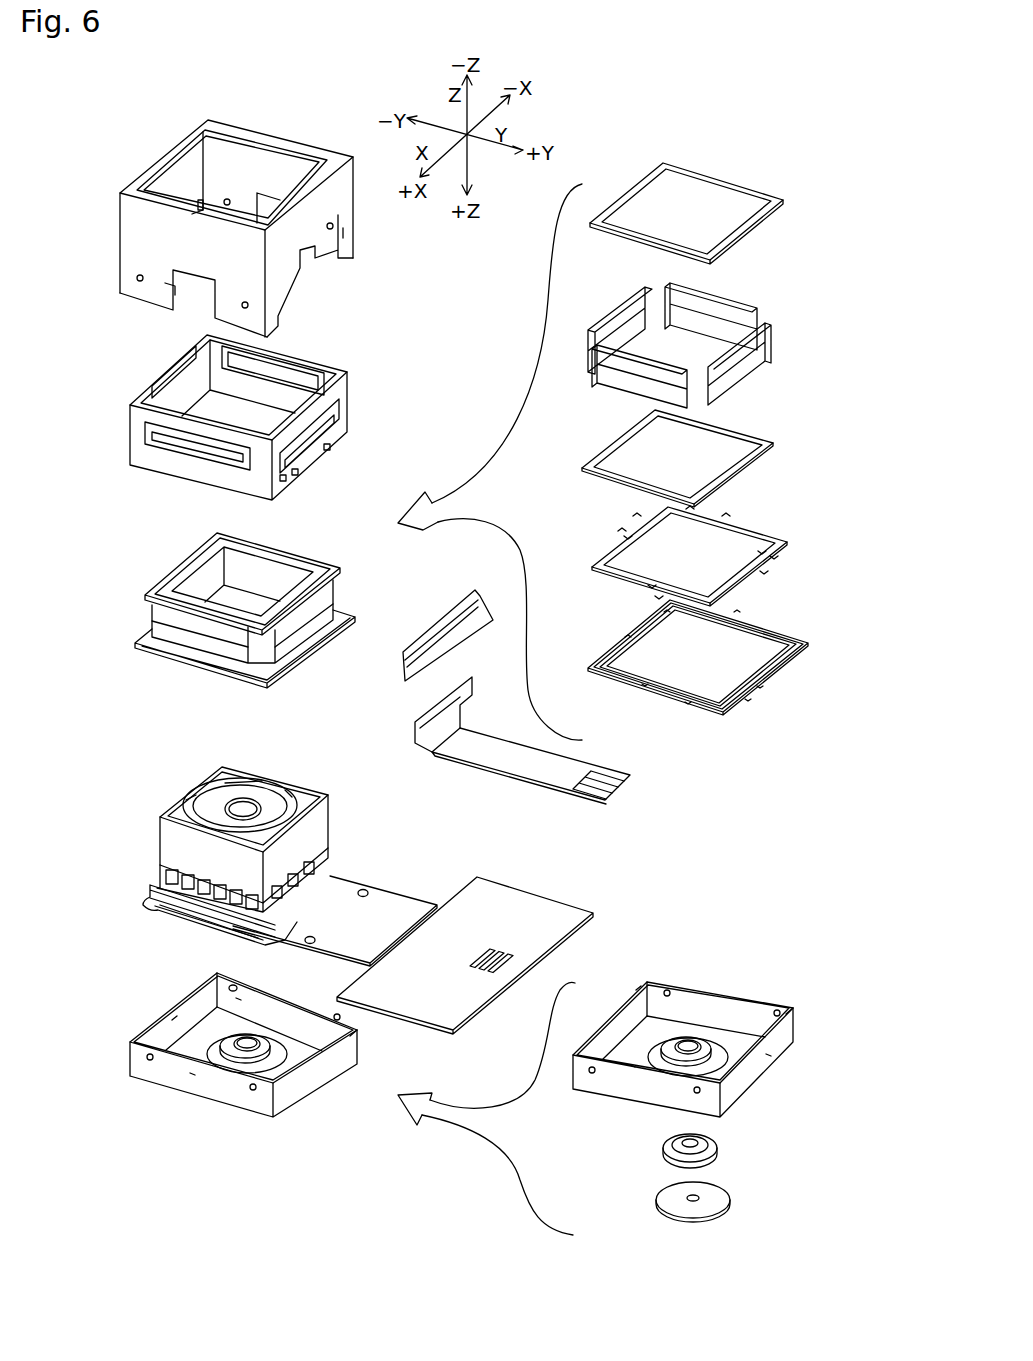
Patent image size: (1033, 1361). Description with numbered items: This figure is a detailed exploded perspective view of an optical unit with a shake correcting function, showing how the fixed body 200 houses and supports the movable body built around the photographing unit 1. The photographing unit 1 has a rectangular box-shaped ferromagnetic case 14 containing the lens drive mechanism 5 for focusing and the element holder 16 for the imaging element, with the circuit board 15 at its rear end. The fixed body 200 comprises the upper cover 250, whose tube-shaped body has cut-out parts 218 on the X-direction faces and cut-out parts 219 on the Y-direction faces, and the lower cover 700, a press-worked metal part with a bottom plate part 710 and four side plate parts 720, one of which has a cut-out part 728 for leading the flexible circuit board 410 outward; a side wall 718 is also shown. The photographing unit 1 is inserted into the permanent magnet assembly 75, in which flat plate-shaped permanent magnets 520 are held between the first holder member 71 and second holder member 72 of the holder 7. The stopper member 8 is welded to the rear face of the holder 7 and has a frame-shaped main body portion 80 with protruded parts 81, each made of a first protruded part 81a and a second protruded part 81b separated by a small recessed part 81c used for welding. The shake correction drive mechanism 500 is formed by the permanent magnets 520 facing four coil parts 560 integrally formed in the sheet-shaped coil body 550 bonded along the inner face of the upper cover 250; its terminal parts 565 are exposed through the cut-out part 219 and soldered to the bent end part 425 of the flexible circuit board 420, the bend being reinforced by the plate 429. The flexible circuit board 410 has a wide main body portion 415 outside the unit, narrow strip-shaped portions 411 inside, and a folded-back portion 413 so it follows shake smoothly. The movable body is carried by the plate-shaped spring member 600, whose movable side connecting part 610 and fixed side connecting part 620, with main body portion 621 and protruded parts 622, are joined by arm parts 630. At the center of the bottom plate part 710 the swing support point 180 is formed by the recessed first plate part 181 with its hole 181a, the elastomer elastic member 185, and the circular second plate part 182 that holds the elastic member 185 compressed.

The photographing unit 1 is at (272, 790).
The lens drive mechanism 5 is at (293, 798).
The holder 7 is at (80, 661).
The stopper member 8 is at (753, 517).
The case 14 is at (323, 820).
The circuit board 15 is at (162, 895).
The element holder 16 is at (332, 852).
The first holder member 71 is at (147, 592).
The second holder member 72 is at (152, 630).
The permanent magnet assembly 75 is at (338, 592).
The main body portion 80 is at (782, 543).
The protruded part 81 is at (823, 395).
The first protruded part 81a is at (722, 518).
The second protruded part 81b is at (690, 510).
The small recessed part 81c is at (628, 537).
The swing support point 180 is at (247, 1042).
The first plate part 181 is at (708, 1060).
The hole 181a is at (685, 1050).
The second plate part 182 is at (723, 1198).
The elastic member 185 is at (717, 1148).
The fixed body 200 is at (118, 223).
The cut-out part 218 is at (270, 197).
The cut-out part 219 is at (200, 208).
The upper cover 250 is at (241, 209).
The flexible circuit board 410 is at (550, 917).
The strip-shaped portion 411 is at (203, 925).
The folded-back portion 413 is at (160, 895).
The main body portion 415 is at (467, 910).
The flexible circuit board 420 is at (502, 757).
The end part 425 is at (468, 693).
The plate 429 is at (460, 602).
The shake correction drive mechanism 500 is at (100, 554).
The permanent magnet 520 is at (800, 332).
The sheet-shaped coil body 550 is at (343, 447).
The coil part 560 is at (372, 375).
The terminal part 565 is at (295, 472).
The spring member 600 is at (595, 673).
The movable side connecting part 610 is at (790, 655).
The fixed side connecting part 620 is at (680, 700).
The main body portion 621 is at (667, 613).
The protruded part 622 is at (642, 717).
The arm part 630 is at (768, 670).
The lower cover 700 is at (143, 1023).
The bottom plate part 710 is at (305, 1062).
The side wall 718 is at (353, 1030).
The side plate part 720 is at (193, 1075).
The cut-out part 728 is at (793, 1023).